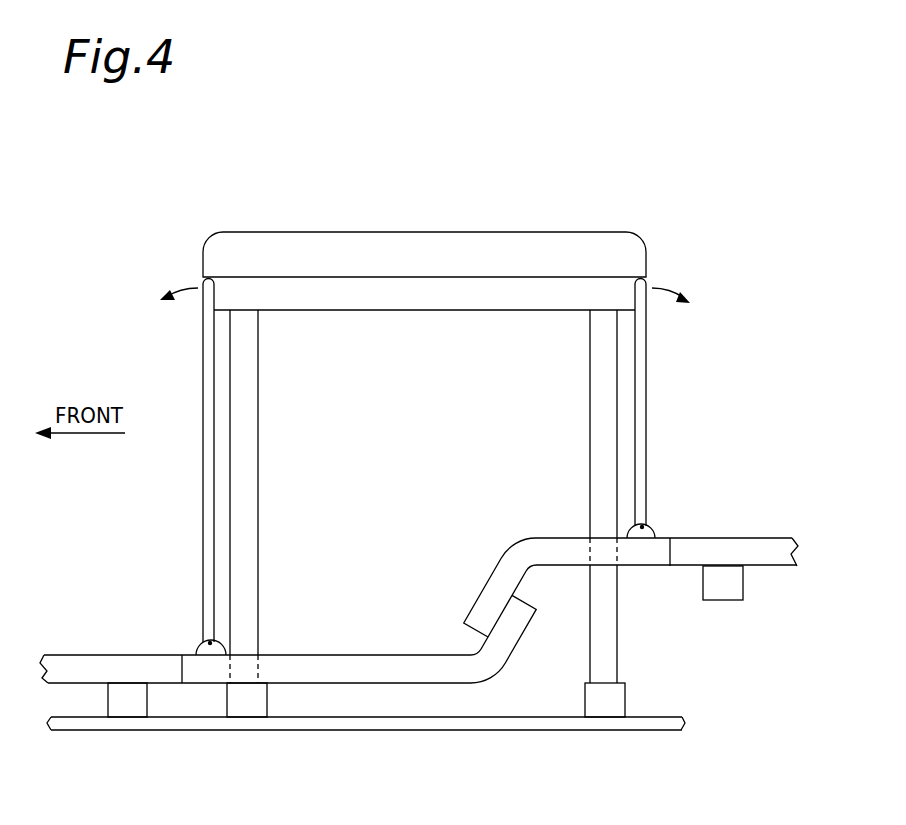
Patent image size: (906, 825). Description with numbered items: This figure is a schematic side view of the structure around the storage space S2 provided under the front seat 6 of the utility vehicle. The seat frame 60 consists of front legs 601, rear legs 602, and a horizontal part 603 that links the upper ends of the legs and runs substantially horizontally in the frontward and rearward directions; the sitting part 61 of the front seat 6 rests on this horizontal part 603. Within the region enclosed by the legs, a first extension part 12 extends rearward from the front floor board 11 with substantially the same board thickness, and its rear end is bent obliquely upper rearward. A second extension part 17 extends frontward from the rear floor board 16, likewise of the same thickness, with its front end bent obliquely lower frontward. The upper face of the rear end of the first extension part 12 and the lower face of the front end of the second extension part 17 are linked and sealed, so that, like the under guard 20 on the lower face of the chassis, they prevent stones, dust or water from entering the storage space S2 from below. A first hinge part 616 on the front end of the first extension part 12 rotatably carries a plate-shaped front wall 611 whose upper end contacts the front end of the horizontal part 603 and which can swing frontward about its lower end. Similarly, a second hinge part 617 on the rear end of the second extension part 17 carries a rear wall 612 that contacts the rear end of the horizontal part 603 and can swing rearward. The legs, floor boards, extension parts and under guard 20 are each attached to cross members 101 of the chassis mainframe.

The front seat 6 is at (396, 204).
The sitting part 61 is at (457, 242).
The seat frame 60 is at (470, 418).
The front legs 601 is at (247, 343).
The rear legs 602 is at (600, 355).
The horizontal part 603 is at (512, 293).
The storage space S2 is at (377, 327).
The front wall 611 is at (210, 490).
The rear wall 612 is at (640, 412).
The first hinge part 616 is at (200, 647).
The second hinge part 617 is at (657, 530).
The front floor board 11 is at (105, 655).
The first extension part 12 is at (383, 670).
The rear floor board 16 is at (738, 538).
The second extension part 17 is at (562, 552).
The under guard 20 is at (80, 728).
The cross members 101 is at (128, 704).